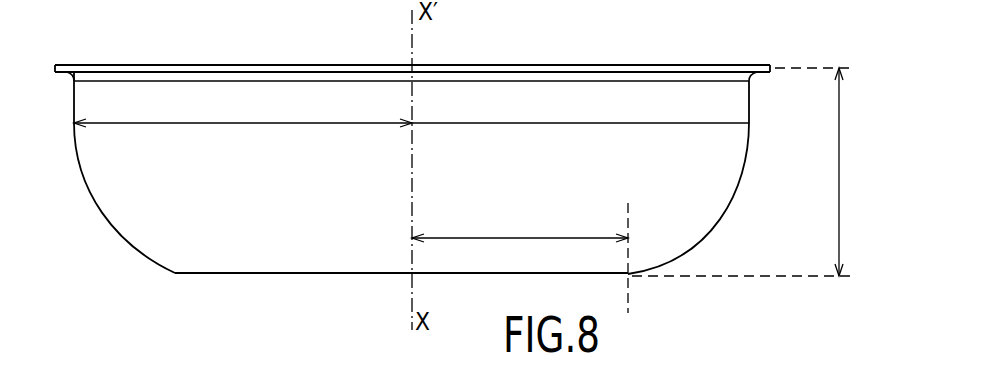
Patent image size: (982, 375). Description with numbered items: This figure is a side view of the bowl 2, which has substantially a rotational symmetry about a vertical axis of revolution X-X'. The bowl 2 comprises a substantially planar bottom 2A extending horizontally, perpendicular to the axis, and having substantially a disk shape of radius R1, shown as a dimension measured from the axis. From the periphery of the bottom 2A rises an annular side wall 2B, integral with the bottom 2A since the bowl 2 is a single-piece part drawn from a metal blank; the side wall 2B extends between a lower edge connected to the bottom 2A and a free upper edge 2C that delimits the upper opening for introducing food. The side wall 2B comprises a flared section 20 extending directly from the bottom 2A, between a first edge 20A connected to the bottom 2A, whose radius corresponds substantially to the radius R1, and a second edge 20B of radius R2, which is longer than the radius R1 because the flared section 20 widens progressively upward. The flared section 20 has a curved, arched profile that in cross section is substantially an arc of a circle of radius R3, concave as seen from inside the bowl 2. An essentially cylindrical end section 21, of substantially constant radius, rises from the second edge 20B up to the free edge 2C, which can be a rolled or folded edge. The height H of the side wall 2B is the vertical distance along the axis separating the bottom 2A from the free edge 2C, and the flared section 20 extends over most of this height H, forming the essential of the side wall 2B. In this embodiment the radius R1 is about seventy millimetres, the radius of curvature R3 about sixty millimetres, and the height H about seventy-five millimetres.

The bowl 2 is at (440, 171).
The bottom 2A is at (330, 278).
The side wall 2B is at (750, 153).
The free upper edge 2C is at (764, 65).
The flared section 20 is at (165, 203).
The first edge 20A is at (175, 275).
The second edge 20B is at (74, 125).
The end section 21 is at (74, 93).
The radius of the bottom R1 is at (520, 258).
The radius of the second edge R2 is at (411, 111).
The radius of curvature R3 is at (105, 213).
The height of the side wall H is at (839, 183).